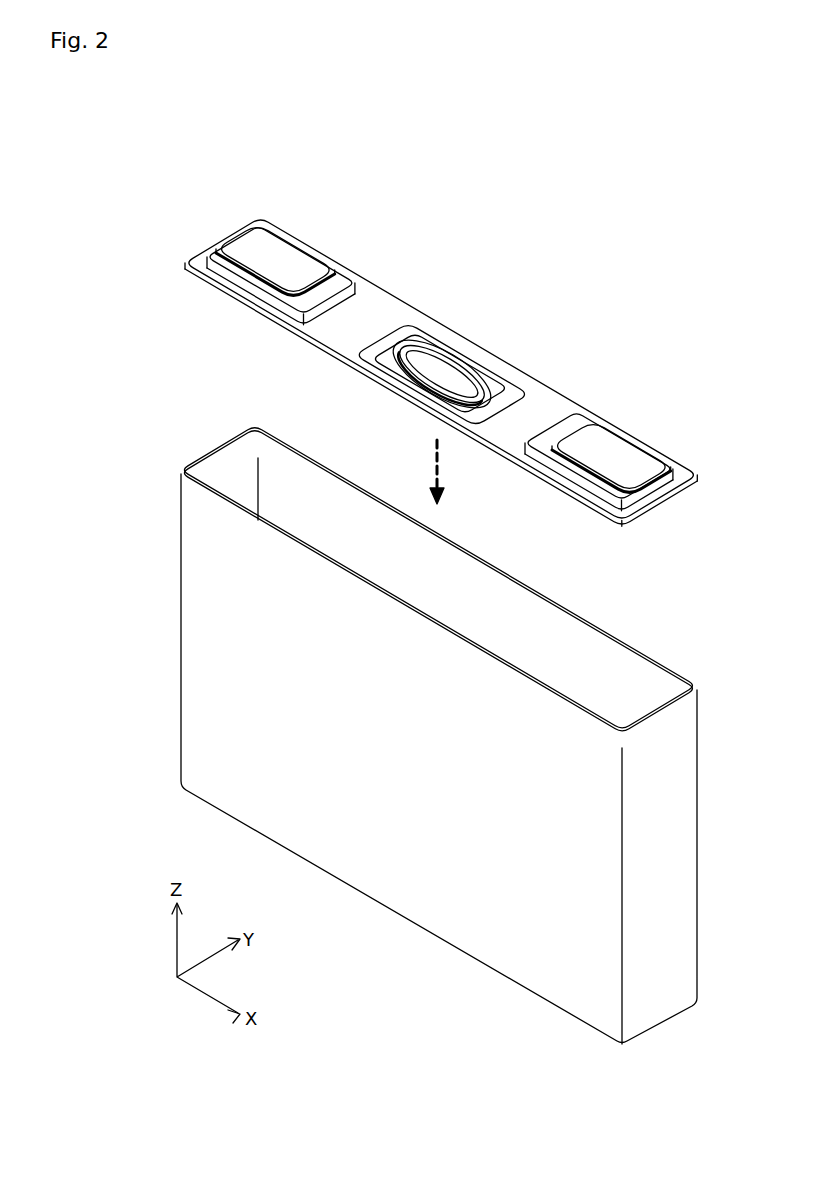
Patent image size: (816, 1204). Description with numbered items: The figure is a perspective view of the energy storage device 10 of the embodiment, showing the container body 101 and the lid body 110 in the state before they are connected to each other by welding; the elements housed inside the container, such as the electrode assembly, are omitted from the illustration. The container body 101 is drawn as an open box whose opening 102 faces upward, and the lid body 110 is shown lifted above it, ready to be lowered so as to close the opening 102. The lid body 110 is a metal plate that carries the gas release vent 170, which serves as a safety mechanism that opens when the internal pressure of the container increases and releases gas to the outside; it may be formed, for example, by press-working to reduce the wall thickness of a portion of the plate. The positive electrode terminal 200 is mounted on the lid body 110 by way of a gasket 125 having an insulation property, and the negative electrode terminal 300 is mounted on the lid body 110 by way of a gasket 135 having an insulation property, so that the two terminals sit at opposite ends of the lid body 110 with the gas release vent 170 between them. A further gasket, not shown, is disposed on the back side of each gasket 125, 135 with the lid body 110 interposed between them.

The energy storage device 10 is at (690, 147).
The container body 101 is at (208, 553).
The opening 102 is at (273, 470).
The lid body 110 is at (392, 315).
The gasket 125 is at (340, 277).
The gasket 135 is at (587, 418).
The gas release vent 170 is at (445, 375).
The positive electrode terminal 200 is at (275, 270).
The negative electrode terminal 300 is at (618, 463).